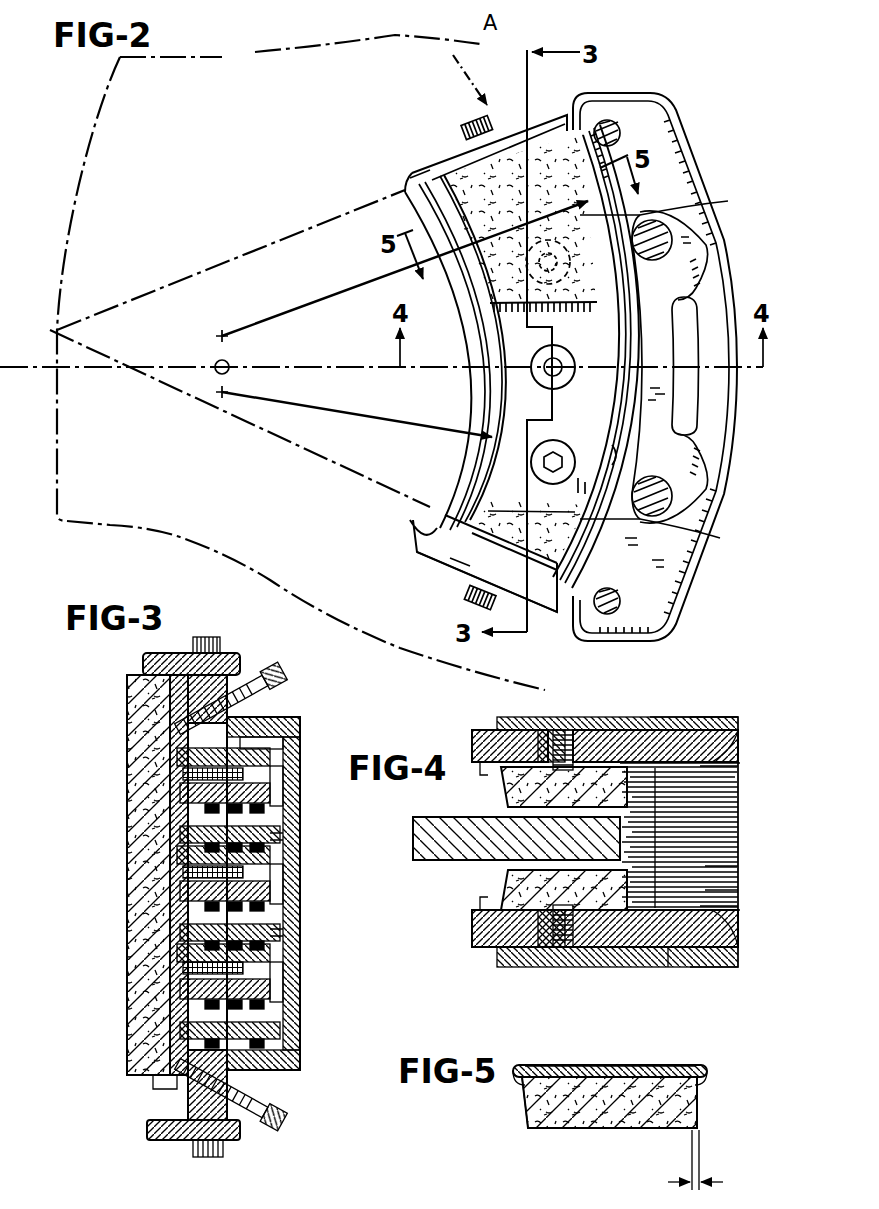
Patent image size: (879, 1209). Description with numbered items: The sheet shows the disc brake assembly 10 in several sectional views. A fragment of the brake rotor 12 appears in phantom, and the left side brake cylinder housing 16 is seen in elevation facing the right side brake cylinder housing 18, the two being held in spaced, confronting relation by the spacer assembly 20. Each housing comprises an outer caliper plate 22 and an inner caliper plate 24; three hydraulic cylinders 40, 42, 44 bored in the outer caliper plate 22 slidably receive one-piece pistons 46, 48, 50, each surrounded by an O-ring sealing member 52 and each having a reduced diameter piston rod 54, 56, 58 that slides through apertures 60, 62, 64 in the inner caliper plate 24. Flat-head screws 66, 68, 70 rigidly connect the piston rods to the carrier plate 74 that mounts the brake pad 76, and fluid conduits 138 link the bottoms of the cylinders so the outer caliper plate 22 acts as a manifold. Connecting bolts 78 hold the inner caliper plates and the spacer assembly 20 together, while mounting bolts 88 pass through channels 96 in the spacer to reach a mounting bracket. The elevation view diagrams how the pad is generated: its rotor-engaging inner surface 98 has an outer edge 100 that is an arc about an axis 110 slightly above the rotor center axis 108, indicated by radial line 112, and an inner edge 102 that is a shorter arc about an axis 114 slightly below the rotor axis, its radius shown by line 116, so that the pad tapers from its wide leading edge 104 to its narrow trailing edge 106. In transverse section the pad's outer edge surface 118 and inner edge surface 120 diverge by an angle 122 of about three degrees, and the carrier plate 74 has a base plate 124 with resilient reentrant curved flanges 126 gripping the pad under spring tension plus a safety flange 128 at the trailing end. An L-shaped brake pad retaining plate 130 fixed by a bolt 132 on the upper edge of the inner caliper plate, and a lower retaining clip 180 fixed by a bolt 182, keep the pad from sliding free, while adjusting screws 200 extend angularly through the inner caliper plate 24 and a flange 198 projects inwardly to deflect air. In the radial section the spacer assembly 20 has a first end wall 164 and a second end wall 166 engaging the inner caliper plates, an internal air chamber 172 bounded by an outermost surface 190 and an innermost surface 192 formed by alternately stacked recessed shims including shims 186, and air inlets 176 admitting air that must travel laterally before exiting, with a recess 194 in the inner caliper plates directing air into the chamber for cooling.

In FIG. 4, the disc brake assembly 10 is at (584, 843).
In FIG. 2, the brake rotor 12 is at (100, 105).
In FIG. 4, the brake rotor 12 is at (413, 835).
In FIG. 2, the left side brake cylinder housing 16 is at (482, 368).
In FIG. 3, the left side brake cylinder housing 16 is at (199, 898).
In FIG. 4, the left side brake cylinder housing 16 is at (722, 702).
In FIG. 4, the right side brake cylinder housing 18 is at (690, 974).
In FIG. 2, the spacer assembly 20 is at (710, 138).
In FIG. 4, the spacer assembly 20 is at (745, 772).
In FIG. 3, the outer caliper plate 22 is at (282, 836).
In FIG. 4, the outer caliper plate 22 is at (500, 726).
In FIG. 2, the inner caliper plate 24 is at (418, 530).
In FIG. 3, the inner caliper plate 24 is at (216, 666).
In FIG. 4, the inner caliper plate 24 is at (475, 746).
In FIG. 3, the hydraulic cylinder 40 is at (283, 804).
In FIG. 3, the hydraulic cylinder 42 is at (283, 882).
In FIG. 3, the hydraulic cylinder 44 is at (283, 977).
In FIG. 3, the piston 46 is at (272, 746).
In FIG. 3, the piston 48 is at (270, 896).
In FIG. 3, the piston 50 is at (272, 1010).
In FIG. 3, the O-ring sealing member 52 is at (262, 718).
In FIG. 3, the piston rod 54 is at (180, 805).
In FIG. 3, the piston rod 56 is at (180, 876).
In FIG. 4, the piston rod 56 is at (545, 734).
In FIG. 3, the piston rod 58 is at (180, 1032).
In FIG. 3, the aperture 60 is at (185, 748).
In FIG. 3, the aperture 62 is at (180, 849).
In FIG. 3, the aperture 64 is at (180, 936).
In FIG. 3, the flat-head screw 66 is at (180, 778).
In FIG. 3, the flat-head screw 68 is at (180, 862).
In FIG. 4, the flat-head screw 68 is at (563, 956).
In FIG. 3, the flat-head screw 70 is at (180, 985).
In FIG. 2, the carrier plate 74 is at (478, 473).
In FIG. 3, the carrier plate 74 is at (172, 690).
In FIG. 5, the carrier plate 74 is at (623, 1065).
In FIG. 2, the brake pad 76 is at (443, 174).
In FIG. 3, the brake pad 76 is at (130, 712).
In FIG. 4, the brake pad 76 is at (506, 792).
In FIG. 5, the brake pad 76 is at (616, 1131).
In FIG. 2, the connecting bolt 78 is at (609, 120).
In FIG. 2, the mounting bolt 88 is at (672, 238).
In FIG. 2, the channel 96 is at (668, 379).
In FIG. 2, the inner surface 98 is at (504, 222).
In FIG. 5, the inner surface 98 is at (609, 1130).
In FIG. 2, the outer edge 100 is at (614, 453).
In FIG. 2, the inner edge 102 is at (486, 386).
In FIG. 2, the leading edge 104 is at (448, 160).
In FIG. 3, the leading edge 104 is at (140, 664).
In FIG. 2, the trailing edge 106 is at (456, 558).
In FIG. 3, the trailing edge 106 is at (152, 1084).
In FIG. 2, the rotor center axis 108 is at (215, 364).
In FIG. 2, the axis 110 is at (224, 333).
In FIG. 2, the radial line 112 is at (326, 299).
In FIG. 2, the axis 114 is at (230, 391).
In FIG. 2, the line 116 is at (356, 414).
In FIG. 5, the outer edge surface 118 is at (698, 1105).
In FIG. 5, the inner edge surface 120 is at (524, 1101).
In FIG. 5, the angle 122 is at (712, 1182).
In FIG. 5, the base plate 124 is at (652, 1065).
In FIG. 5, the reentrant curved flange 126 is at (516, 1068).
In FIG. 2, the safety flange 128 is at (467, 595).
In FIG. 3, the safety flange 128 is at (162, 1090).
In FIG. 2, the brake pad retaining plate 130 is at (541, 114).
In FIG. 3, the brake pad retaining plate 130 is at (176, 654).
In FIG. 2, the bolt 132 is at (468, 124).
In FIG. 3, the bolt 132 is at (207, 640).
In FIG. 4, the bolt 132 is at (511, 716).
In FIG. 3, the fluid conduit 138 is at (282, 845).
In FIG. 4, the first end wall 164 is at (697, 714).
In FIG. 4, the second end wall 166 is at (712, 968).
In FIG. 4, the air chamber 172 is at (656, 730).
In FIG. 4, the air inlet 176 is at (742, 842).
In FIG. 3, the lower retaining clip 180 is at (170, 1140).
In FIG. 4, the lower retaining clip 180 is at (658, 966).
In FIG. 3, the bolt 182 is at (207, 1158).
In FIG. 4, the bolt 182 is at (740, 787).
In FIG. 4, the shim 186 is at (626, 730).
In FIG. 4, the outermost surface 190 is at (742, 877).
In FIG. 4, the innermost surface 192 is at (742, 895).
In FIG. 4, the recess 194 is at (741, 736).
In FIG. 4, the flange 198 is at (474, 772).
In FIG. 3, the adjusting screw 200 is at (287, 673).